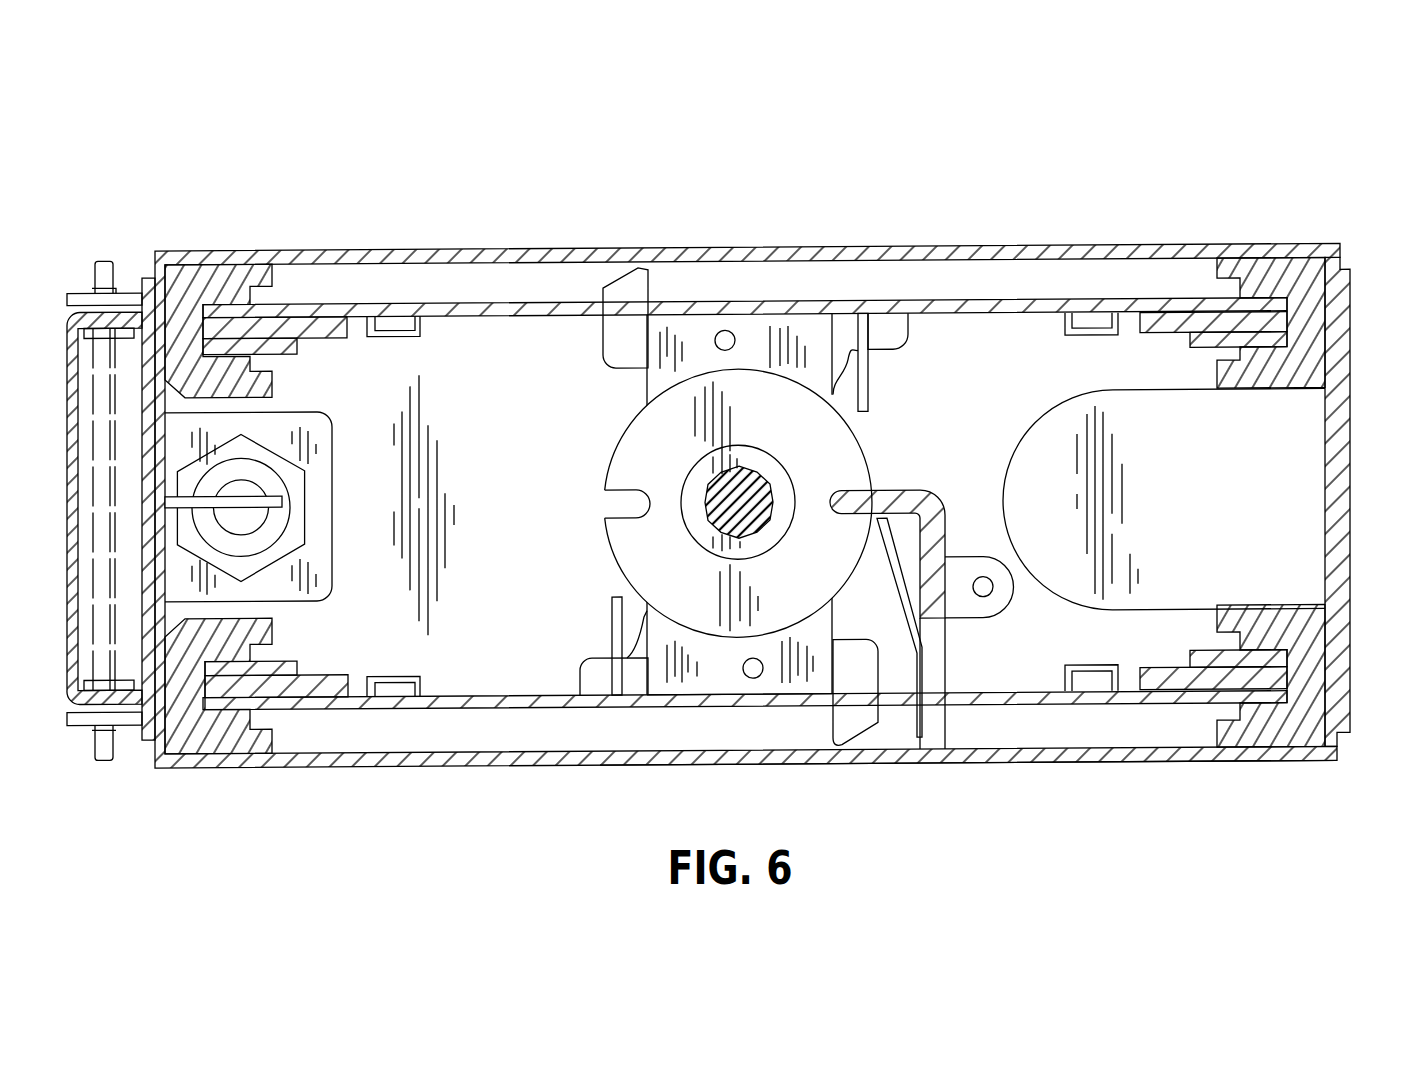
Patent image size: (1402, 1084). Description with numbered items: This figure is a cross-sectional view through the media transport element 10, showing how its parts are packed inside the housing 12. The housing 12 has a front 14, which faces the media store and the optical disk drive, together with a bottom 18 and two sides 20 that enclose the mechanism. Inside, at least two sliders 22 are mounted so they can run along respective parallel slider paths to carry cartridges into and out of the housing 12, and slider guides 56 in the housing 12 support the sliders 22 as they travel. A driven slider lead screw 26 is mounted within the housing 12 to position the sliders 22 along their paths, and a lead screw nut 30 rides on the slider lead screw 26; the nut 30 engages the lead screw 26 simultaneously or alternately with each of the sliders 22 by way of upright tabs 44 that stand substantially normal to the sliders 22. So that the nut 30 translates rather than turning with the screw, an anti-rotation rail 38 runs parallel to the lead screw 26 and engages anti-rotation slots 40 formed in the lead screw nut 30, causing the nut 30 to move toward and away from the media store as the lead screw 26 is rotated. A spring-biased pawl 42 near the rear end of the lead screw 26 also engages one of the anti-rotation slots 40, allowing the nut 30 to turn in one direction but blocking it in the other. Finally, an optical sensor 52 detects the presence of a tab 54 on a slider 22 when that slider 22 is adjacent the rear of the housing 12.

The media transport element 10 is at (1365, 200).
The housing 12 is at (440, 768).
The front 14 is at (283, 327).
The bottom 18 is at (852, 768).
The sides 20 is at (1352, 474).
The sliders 22 is at (1040, 287).
The slider lead screw 26 is at (723, 497).
The lead screw nut 30 is at (861, 456).
The anti-rotation rail 38 is at (924, 491).
The anti-rotation slots 40 is at (622, 516).
The spring-biased pawl 42 is at (888, 574).
The upright tabs 44 is at (760, 337).
The optical sensor 52 is at (276, 489).
The tab 54 is at (623, 284).
The slider guides 56 is at (197, 282).